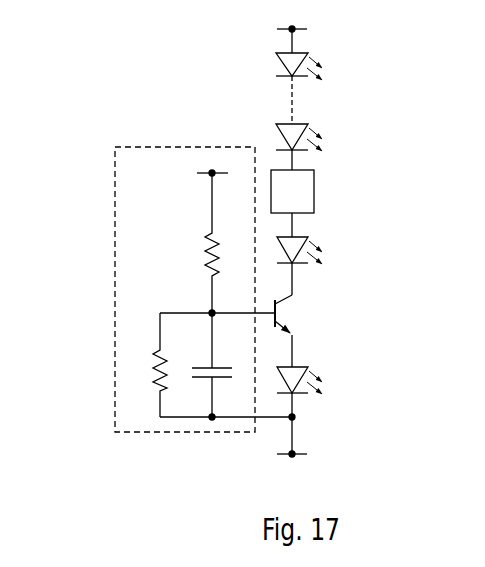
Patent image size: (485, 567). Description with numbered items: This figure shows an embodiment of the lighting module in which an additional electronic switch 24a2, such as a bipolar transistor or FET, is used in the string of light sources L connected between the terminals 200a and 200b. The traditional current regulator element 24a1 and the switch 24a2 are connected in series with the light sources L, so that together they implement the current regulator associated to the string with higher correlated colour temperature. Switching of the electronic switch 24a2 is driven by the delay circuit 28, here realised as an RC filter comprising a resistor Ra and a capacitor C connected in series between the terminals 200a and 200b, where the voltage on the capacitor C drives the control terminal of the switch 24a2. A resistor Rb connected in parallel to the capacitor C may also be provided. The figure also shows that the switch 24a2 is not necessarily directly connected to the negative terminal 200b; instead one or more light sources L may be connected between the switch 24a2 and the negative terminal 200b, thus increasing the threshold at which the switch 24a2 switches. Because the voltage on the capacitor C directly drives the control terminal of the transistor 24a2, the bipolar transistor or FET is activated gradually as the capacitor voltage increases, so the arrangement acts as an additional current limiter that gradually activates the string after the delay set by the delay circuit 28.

The terminal 200a is at (222, 101).
The negative terminal 200b is at (320, 432).
The delay circuit 28 is at (112, 312).
The switch 24a1 is at (350, 202).
The additional electronic switch 24a2 is at (325, 312).
The light sources L is at (347, 70).
The resistor Ra is at (194, 243).
The resistor Rb is at (144, 365).
The capacitor C is at (218, 365).